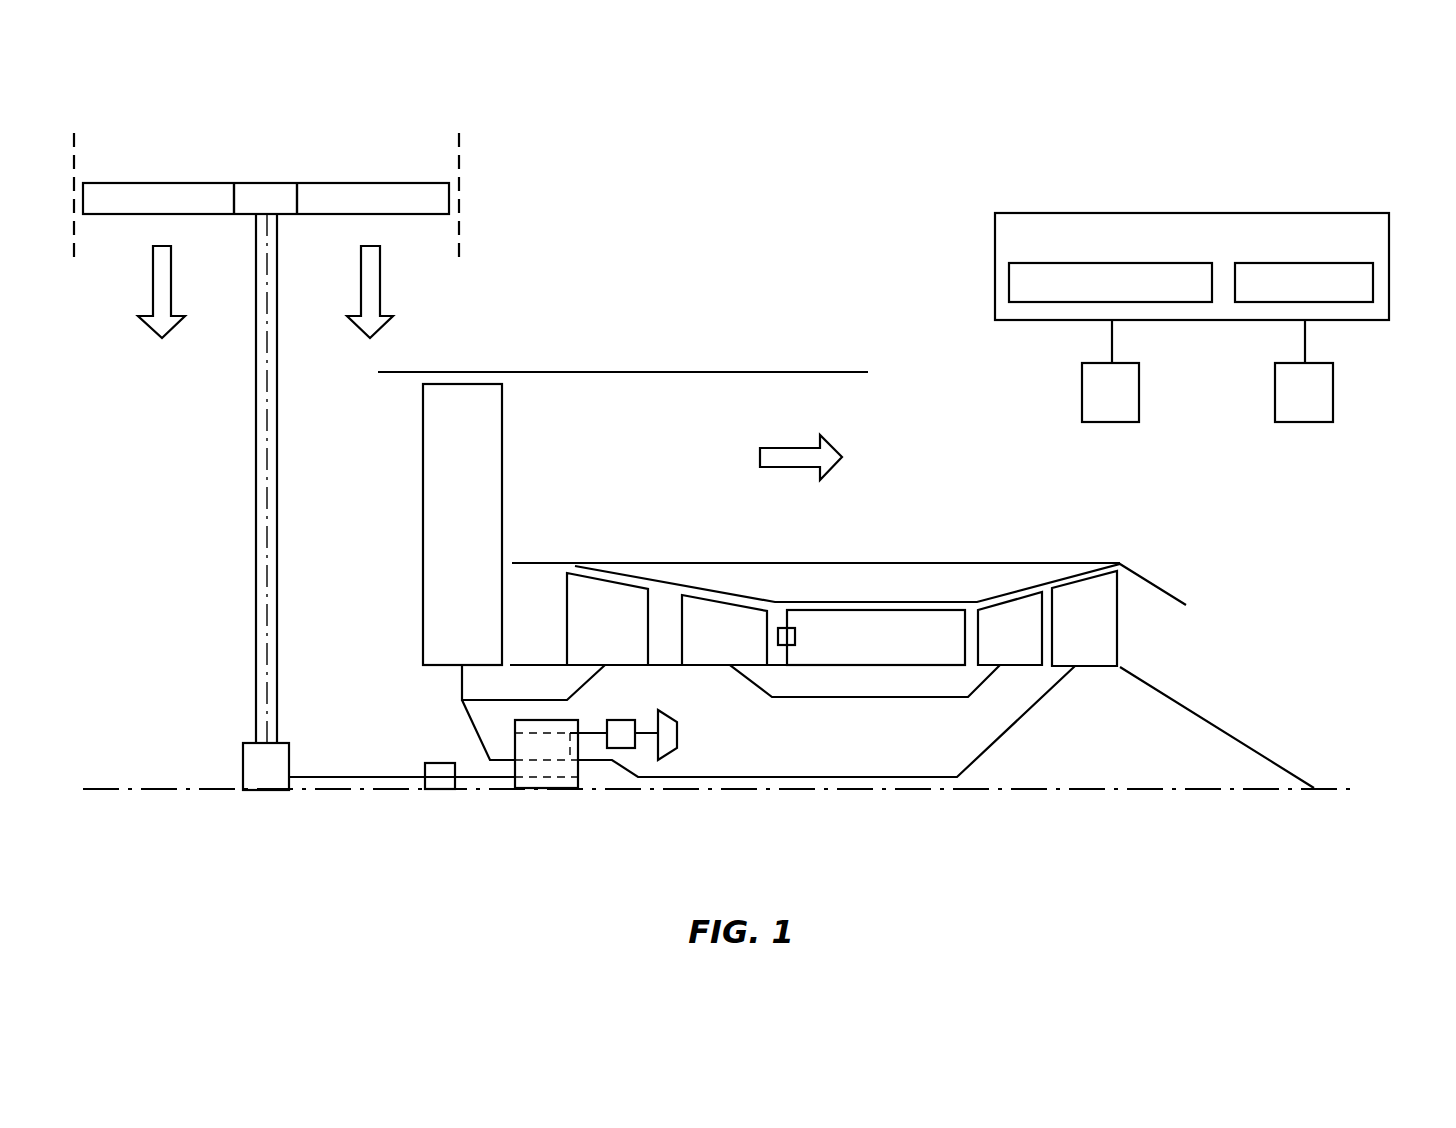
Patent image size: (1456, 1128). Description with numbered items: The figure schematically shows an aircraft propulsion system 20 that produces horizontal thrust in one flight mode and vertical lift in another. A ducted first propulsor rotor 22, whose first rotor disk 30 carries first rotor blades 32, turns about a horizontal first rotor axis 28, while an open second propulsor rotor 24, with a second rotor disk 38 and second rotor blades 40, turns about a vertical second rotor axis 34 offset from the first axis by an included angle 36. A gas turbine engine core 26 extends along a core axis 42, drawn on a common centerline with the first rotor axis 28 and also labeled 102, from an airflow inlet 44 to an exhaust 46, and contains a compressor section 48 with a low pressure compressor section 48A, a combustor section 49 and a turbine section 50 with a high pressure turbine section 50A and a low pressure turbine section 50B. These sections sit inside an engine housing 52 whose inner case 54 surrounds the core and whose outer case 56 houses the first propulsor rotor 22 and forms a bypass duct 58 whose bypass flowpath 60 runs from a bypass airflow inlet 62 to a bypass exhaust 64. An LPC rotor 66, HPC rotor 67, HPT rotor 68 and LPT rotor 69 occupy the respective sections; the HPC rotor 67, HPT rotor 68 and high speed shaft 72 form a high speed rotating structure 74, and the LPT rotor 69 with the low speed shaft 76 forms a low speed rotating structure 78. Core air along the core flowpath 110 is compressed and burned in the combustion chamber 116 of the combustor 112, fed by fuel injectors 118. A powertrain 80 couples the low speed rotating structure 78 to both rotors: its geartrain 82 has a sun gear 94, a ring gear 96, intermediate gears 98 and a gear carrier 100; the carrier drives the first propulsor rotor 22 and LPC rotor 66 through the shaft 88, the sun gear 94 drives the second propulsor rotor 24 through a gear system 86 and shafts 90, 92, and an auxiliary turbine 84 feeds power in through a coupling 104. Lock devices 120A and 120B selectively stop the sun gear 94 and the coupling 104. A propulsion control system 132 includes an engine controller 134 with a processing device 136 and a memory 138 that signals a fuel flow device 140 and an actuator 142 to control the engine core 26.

The aircraft propulsion system 20 is at (940, 192).
The first propulsor rotor 22 is at (412, 525).
The second propulsor rotor 24 is at (266, 217).
The gas turbine engine core 26 is at (849, 668).
The first rotor axis 28 is at (729, 833).
The first rotor disk 30 is at (462, 682).
The first rotor blades 32 is at (423, 510).
The second rotor axis 34 is at (223, 478).
The included angle 36 is at (264, 655).
The second rotor disk 38 is at (266, 183).
The second rotor blades 40 is at (162, 183).
The core axis 42 is at (729, 833).
The airflow inlet 44 is at (508, 599).
The exhaust 46 is at (1196, 603).
The compressor section 48 is at (667, 556).
The low pressure compressor section 48A is at (615, 573).
The combustor section 49 is at (899, 596).
The turbine section 50 is at (1039, 552).
The high pressure turbine section 50A is at (1007, 593).
The low pressure turbine section 50B is at (1078, 582).
The engine housing 52 is at (796, 330).
The inner case 54 is at (845, 561).
The outer case 56 is at (637, 370).
The bypass duct 58 is at (858, 358).
The bypass flowpath 60 is at (565, 420).
The airflow inlet 62 is at (520, 420).
The exhaust 64 is at (860, 436).
The LPC rotor 66 is at (620, 665).
The HPC rotor 67 is at (700, 665).
The HPT rotor 68 is at (1017, 665).
The LPT rotor 69 is at (1097, 666).
The high speed shaft 72 is at (935, 698).
The high speed rotating structure 74 is at (835, 701).
The low speed shaft 76 is at (833, 778).
The low speed rotating structure 78 is at (928, 791).
The powertrain 80 is at (360, 825).
The geartrain 82 is at (530, 801).
The auxiliary turbine 84 is at (675, 755).
The gear system 86 is at (266, 766).
The first propulsor/LPC rotor shaft 88 is at (500, 760).
The geartrain output shaft 90 is at (305, 777).
The shaft 92 is at (256, 556).
The sun gear 94 is at (538, 790).
The ring gear 96 is at (570, 770).
The intermediate gears 98 is at (577, 846).
The gear carrier 100 is at (558, 795).
The reference surface 102 is at (1334, 789).
The power transmission coupling 104 is at (592, 733).
The core flowpath 110 is at (538, 623).
The combustor 112 is at (802, 603).
The combustion chamber 116 is at (876, 637).
The fuel injectors 118 is at (795, 640).
The lock device 120A is at (440, 789).
The lock device 120B is at (623, 748).
The propulsion control system 132 is at (1222, 263).
The engine controller 134 is at (1389, 245).
The processing device 136 is at (1180, 302).
The memory 138 is at (1355, 302).
The fuel flow device 140 is at (1110, 371).
The actuator 142 is at (1304, 371).